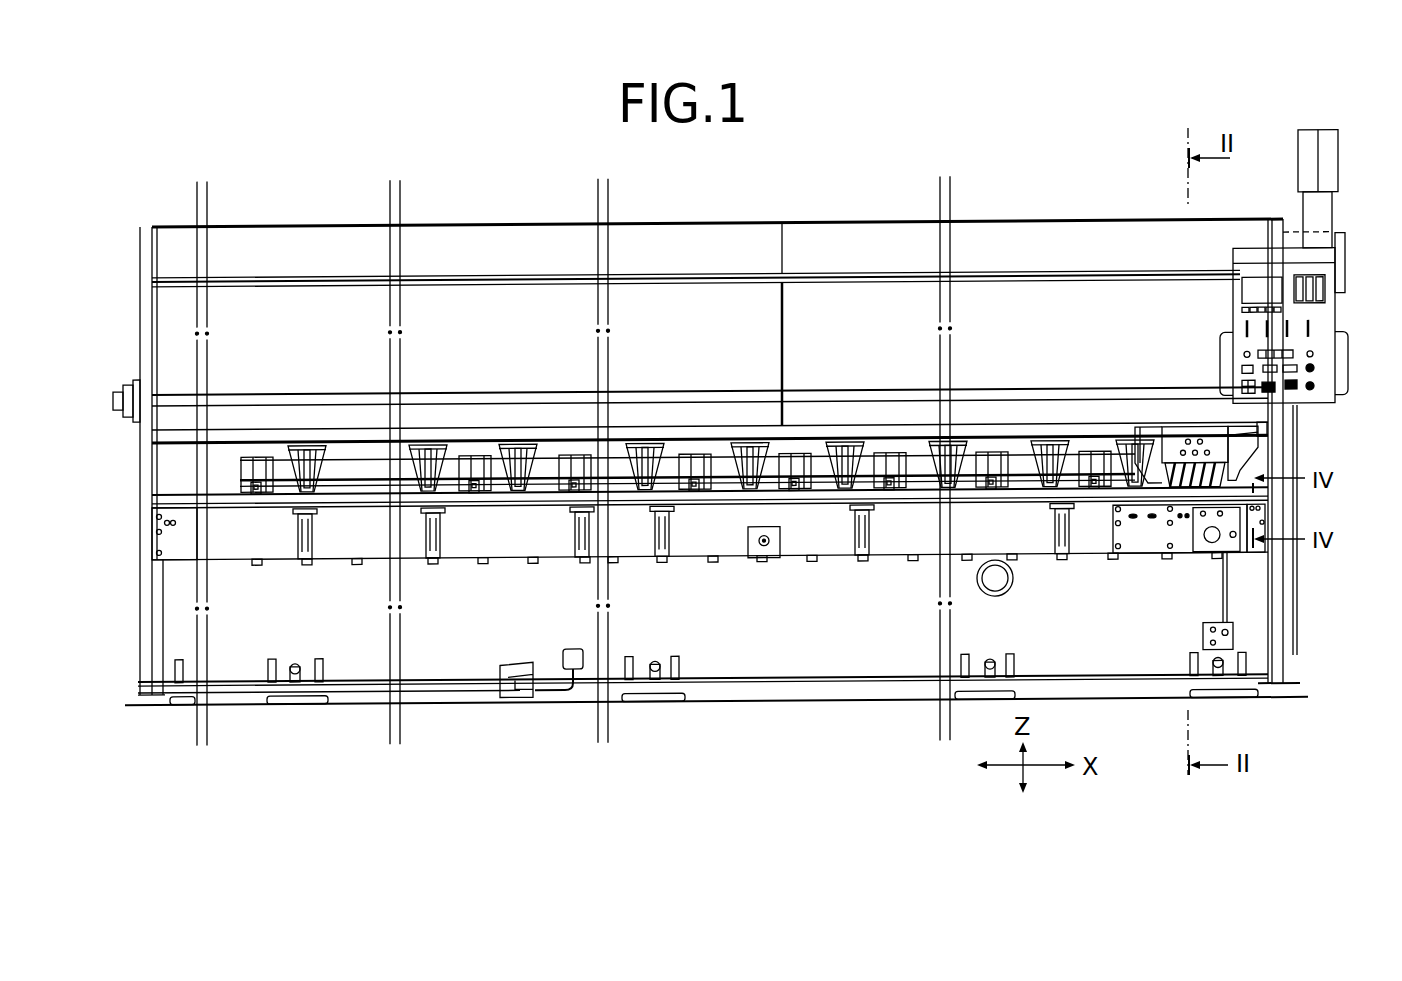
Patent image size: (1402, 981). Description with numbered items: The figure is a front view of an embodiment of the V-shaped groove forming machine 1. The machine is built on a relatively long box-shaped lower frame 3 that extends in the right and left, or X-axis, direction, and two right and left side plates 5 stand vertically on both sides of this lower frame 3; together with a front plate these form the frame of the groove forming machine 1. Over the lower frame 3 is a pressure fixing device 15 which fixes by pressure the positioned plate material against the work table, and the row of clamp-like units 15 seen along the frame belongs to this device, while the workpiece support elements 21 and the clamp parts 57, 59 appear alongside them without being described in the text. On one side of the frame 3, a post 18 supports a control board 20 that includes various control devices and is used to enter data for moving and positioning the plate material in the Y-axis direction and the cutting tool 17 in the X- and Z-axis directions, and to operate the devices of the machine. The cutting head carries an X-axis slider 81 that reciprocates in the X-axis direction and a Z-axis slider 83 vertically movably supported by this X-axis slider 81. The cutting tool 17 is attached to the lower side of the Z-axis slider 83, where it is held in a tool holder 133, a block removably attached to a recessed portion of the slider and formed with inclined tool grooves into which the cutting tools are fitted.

The V-shaped groove forming machine 1 is at (729, 419).
The lower frame 3 is at (832, 668).
The side plate 5 is at (146, 588).
The pressure fixing device 15 is at (449, 489).
The cutting tool 17 is at (1178, 492).
The post 18 is at (1329, 208).
The control board 20 is at (1329, 314).
The workpiece support rail 21 is at (244, 504).
The clamp cylinder 57 is at (968, 462).
The clamp jaw 59 is at (1000, 462).
The X-axis slider 81 is at (1240, 438).
The Z-axis slider 83 is at (1172, 428).
The tool holder 133 is at (1247, 471).